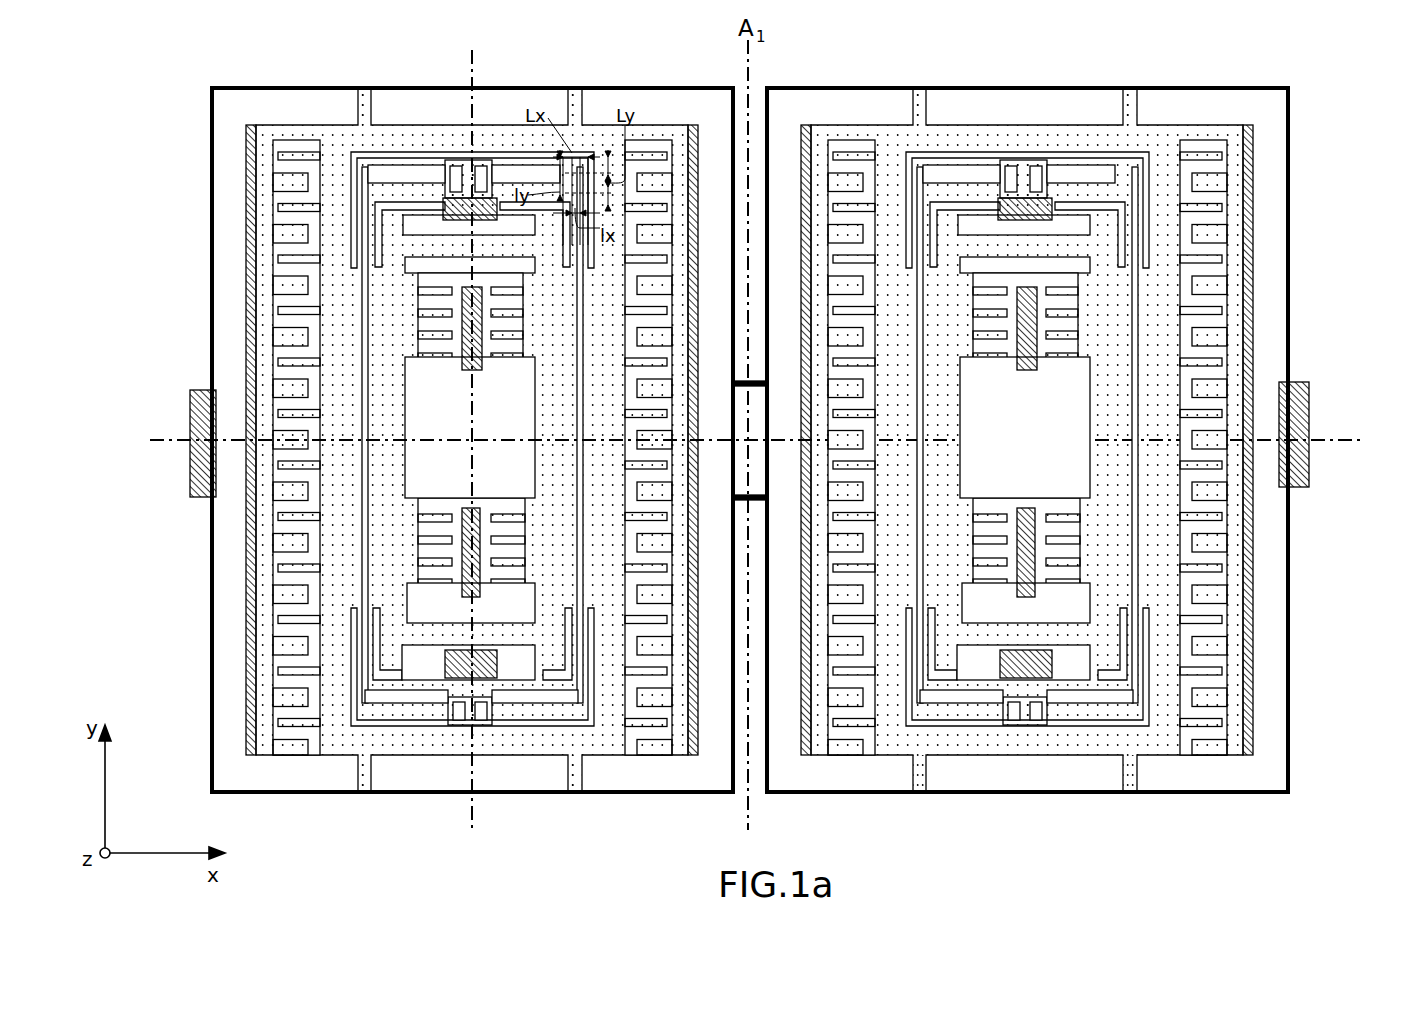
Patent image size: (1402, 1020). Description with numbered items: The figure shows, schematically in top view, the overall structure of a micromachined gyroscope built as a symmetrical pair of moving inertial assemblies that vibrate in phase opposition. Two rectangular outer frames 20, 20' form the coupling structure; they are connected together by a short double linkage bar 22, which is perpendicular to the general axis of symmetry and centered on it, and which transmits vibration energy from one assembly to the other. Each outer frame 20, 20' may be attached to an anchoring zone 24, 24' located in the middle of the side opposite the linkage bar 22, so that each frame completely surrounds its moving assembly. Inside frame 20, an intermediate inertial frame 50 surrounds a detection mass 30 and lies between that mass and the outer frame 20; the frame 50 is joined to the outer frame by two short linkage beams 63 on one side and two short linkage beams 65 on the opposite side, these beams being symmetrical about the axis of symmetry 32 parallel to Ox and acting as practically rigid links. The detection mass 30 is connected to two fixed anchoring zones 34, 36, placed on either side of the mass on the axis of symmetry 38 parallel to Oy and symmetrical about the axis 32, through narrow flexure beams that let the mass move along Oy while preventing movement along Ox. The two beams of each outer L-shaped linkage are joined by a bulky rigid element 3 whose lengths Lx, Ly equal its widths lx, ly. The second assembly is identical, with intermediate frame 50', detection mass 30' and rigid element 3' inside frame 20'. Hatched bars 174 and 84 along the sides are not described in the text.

The rectangular outer frame 20 is at (469, 416).
The rectangular outer frame 20' is at (1046, 419).
The intermediate inertial frame 50 is at (472, 404).
The intermediate inertial frame 50' is at (1027, 419).
The left anchor electrode bar 174 is at (245, 142).
The right anchor electrode bar 84 is at (698, 747).
The rigid element 3 is at (469, 427).
The rigid element 3' is at (982, 396).
The detection mass 30 is at (476, 427).
The detection mass 30' is at (1032, 427).
The anchoring zone 34 is at (445, 205).
The anchoring zone 36 is at (488, 672).
The short linkage beams 63 is at (356, 100).
The short linkage beams 65 is at (362, 780).
The anchoring zone 24 is at (172, 440).
The anchoring zone 24' is at (1326, 419).
The axis of symmetry 38 is at (466, 52).
The axis of symmetry 32 is at (1343, 438).
The double linkage bar 22 is at (768, 497).